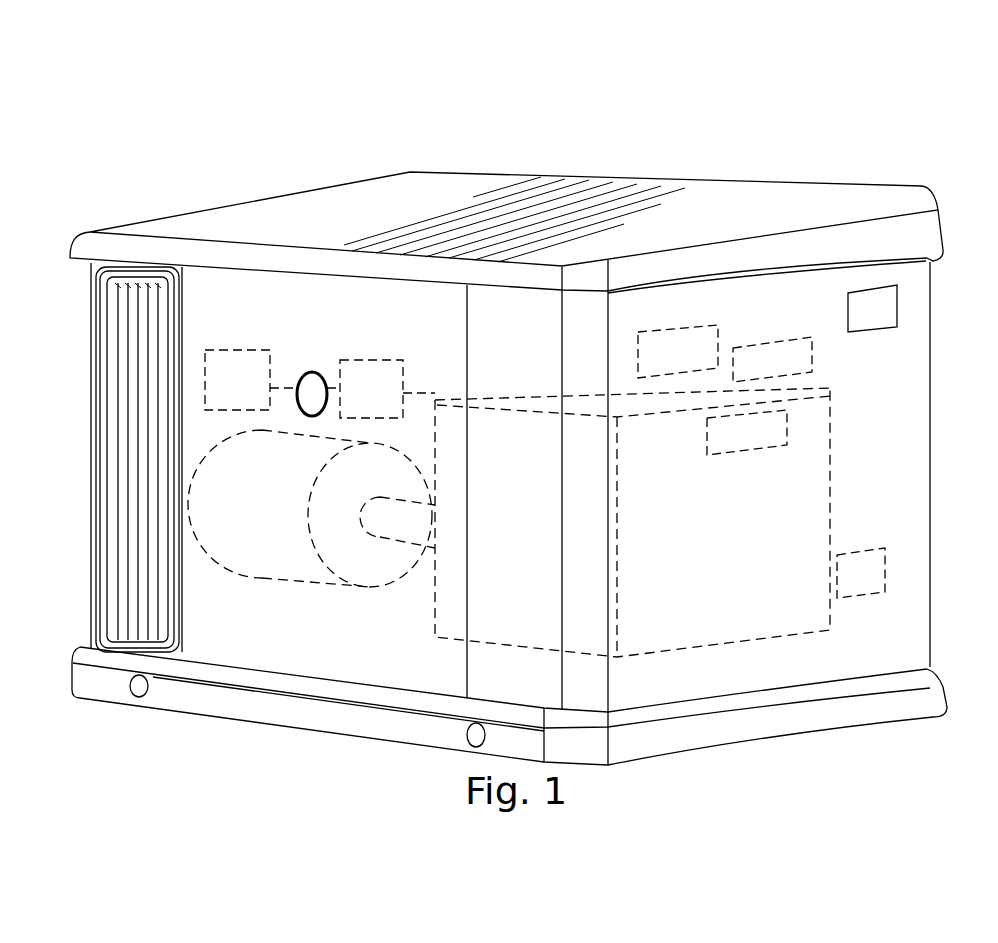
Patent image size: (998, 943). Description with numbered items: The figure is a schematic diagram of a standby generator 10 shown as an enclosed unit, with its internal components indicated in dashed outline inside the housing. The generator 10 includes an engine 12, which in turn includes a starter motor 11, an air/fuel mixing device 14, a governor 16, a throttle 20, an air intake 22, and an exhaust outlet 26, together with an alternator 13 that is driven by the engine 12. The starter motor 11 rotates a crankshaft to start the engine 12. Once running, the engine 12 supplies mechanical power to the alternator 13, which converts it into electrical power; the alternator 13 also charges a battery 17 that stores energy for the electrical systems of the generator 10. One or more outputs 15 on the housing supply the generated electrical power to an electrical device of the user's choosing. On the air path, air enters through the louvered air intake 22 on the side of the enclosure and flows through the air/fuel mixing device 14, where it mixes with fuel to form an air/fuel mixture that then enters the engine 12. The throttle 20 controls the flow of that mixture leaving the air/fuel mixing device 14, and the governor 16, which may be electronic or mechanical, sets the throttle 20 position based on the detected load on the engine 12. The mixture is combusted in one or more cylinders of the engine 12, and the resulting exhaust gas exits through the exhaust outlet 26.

The generator 10 is at (783, 112).
The starter motor 11 is at (374, 386).
The engine 12 is at (815, 510).
The alternator 13 is at (220, 500).
The air/fuel mixing device 14 is at (670, 341).
The outputs 15 is at (883, 304).
The governor 16 is at (773, 435).
The battery 17 is at (218, 380).
The throttle 20 is at (795, 360).
The air intake 22 is at (118, 459).
The exhaust outlet 26 is at (867, 572).